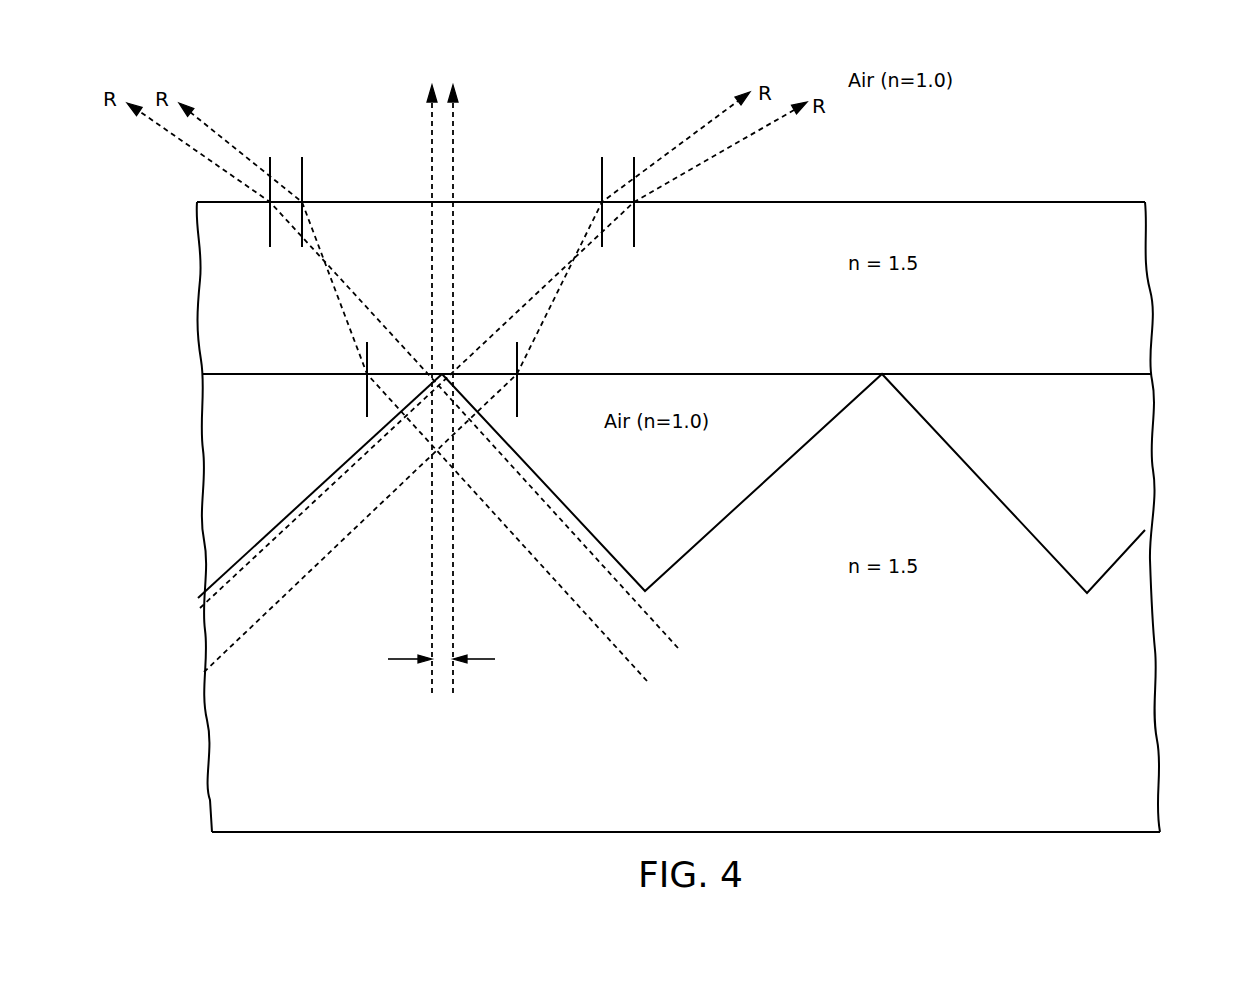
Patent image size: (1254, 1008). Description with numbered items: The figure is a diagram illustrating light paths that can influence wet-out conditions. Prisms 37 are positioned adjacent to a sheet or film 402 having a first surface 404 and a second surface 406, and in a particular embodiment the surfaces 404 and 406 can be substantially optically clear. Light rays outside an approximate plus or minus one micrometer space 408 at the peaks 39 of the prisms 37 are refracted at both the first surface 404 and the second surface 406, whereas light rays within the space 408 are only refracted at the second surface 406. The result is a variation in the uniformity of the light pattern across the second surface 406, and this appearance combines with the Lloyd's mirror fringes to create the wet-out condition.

The sheet or film 402 is at (1130, 290).
The first surface 404 is at (1130, 375).
The second surface 406 is at (1130, 201).
The prisms 37 is at (970, 497).
The peaks 39 is at (882, 374).
The space 408 is at (484, 659).